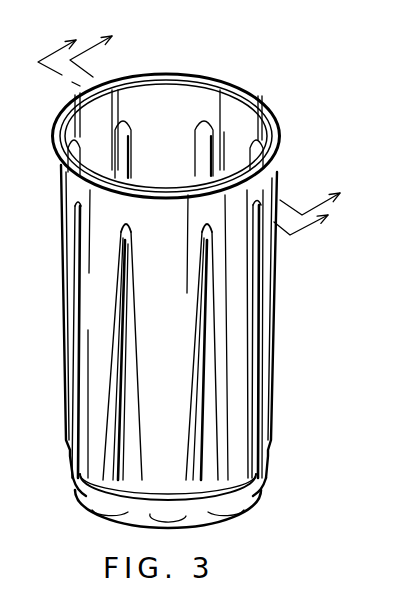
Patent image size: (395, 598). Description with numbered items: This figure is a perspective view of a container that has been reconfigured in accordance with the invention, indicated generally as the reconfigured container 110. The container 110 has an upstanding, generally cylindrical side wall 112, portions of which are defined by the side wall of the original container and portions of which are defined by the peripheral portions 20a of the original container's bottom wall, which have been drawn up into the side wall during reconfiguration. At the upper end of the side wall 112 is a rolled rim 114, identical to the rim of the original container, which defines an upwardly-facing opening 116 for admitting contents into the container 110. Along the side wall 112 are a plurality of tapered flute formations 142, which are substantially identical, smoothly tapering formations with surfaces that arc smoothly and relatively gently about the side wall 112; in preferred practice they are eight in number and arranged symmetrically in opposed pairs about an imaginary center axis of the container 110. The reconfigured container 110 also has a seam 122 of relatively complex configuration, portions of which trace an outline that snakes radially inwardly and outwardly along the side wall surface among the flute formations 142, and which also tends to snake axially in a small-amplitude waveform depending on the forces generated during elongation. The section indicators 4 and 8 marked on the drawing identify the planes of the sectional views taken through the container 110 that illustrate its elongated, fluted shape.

The reconfigured container 110 is at (262, 87).
The side wall 112 is at (270, 319).
The rolled rim 114 is at (140, 72).
The opening 116 is at (173, 120).
The flute formations 142 is at (126, 405).
The seam 122 is at (82, 489).
The peripheral portions of the bottom wall 20a is at (247, 503).
The section line 4- 4 is at (189, 118).
The section line 8- 8 is at (206, 128).